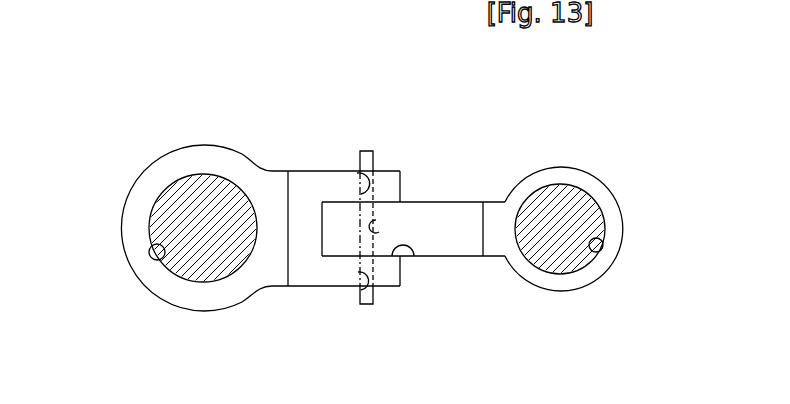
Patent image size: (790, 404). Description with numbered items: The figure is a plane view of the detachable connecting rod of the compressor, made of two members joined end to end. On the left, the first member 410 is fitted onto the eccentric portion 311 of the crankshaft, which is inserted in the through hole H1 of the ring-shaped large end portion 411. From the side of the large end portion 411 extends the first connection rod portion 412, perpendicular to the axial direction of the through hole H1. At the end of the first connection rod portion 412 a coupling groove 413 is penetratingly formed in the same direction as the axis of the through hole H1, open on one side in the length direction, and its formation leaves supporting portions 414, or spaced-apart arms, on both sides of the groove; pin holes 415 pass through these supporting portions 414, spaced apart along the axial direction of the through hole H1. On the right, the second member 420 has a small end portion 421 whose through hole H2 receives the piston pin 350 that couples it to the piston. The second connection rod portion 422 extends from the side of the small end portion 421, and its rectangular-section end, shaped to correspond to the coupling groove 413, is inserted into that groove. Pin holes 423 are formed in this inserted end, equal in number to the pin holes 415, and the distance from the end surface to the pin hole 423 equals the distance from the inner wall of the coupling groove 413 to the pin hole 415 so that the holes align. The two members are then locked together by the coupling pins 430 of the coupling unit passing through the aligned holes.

The first member 410 is at (243, 219).
The eccentric portion 311 is at (203, 180).
The large end portion 411 is at (135, 210).
The through hole H1 is at (165, 251).
The first connection rod portion 412 is at (303, 275).
The supporting portions 414 is at (390, 183).
The pin holes 415 is at (358, 173).
The coupling pins 430 is at (359, 216).
The pin holes 423 is at (379, 232).
The coupling groove 413 is at (413, 256).
The second connection rod portion 422 is at (468, 243).
The piston pin 350 is at (547, 200).
The second member 420 is at (520, 230).
The small end portion 421 is at (615, 222).
The through hole H2 is at (595, 253).